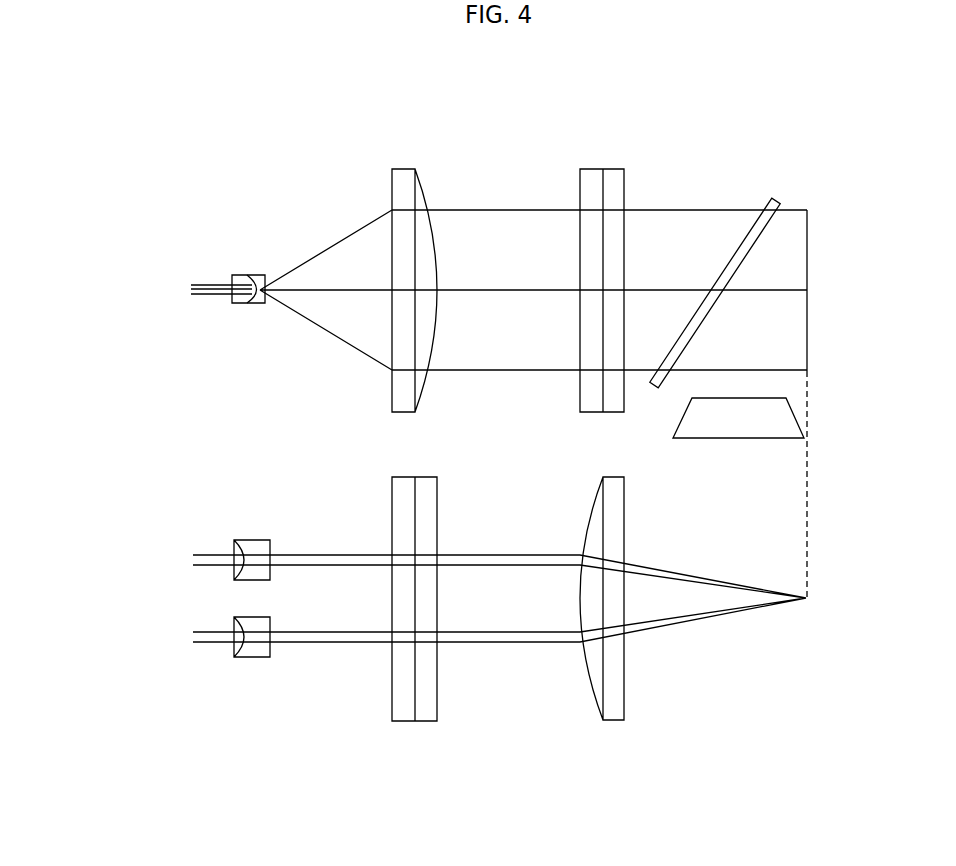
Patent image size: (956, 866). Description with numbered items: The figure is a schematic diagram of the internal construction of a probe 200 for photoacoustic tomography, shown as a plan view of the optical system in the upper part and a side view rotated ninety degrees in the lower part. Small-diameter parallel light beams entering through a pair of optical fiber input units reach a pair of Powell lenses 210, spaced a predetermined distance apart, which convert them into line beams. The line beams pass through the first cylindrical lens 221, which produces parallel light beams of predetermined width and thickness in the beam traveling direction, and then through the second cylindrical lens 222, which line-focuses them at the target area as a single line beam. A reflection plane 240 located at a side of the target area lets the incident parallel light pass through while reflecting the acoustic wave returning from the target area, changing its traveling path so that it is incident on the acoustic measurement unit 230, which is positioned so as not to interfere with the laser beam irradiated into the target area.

The probe for photoacoustic tomography 200 is at (682, 189).
The Powell lens 210 is at (257, 275).
The first cylindrical lens 221 is at (404, 182).
The second cylindrical lens 222 is at (591, 182).
The acoustic measurement unit 230 is at (738, 423).
The reflection plane 240 is at (752, 232).